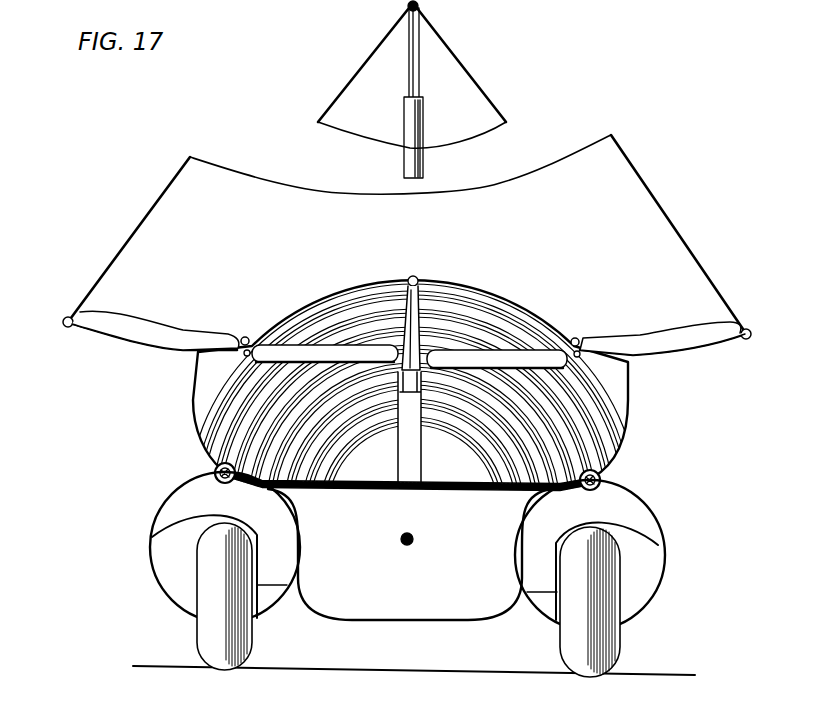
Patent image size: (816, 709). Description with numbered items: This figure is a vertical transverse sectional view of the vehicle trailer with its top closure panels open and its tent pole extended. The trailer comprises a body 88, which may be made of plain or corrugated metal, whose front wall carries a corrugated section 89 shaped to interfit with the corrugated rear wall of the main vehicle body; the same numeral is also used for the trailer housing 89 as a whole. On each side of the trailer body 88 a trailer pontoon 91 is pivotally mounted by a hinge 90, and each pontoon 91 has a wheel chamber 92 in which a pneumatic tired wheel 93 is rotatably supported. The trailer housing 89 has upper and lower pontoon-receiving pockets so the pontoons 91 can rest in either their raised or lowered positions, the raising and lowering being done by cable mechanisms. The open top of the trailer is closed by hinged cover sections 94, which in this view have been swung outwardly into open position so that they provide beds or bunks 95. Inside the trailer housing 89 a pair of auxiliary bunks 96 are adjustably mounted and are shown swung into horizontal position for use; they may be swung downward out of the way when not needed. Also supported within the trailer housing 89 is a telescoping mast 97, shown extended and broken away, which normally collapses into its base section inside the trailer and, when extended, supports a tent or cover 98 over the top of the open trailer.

The trailer body 88 is at (337, 610).
The corrugated section 89 is at (560, 441).
The hinge 90 is at (601, 478).
The trailer pontoon 91 is at (650, 518).
The wheel chamber 92 is at (638, 562).
The pneumatic tired wheel 93 is at (590, 652).
The hinged cover sections 94 is at (702, 348).
The beds or bunks 95 is at (638, 342).
The auxiliary bunks 96 is at (453, 360).
The telescoping mast 97 is at (410, 155).
The tent or cover 98 is at (493, 101).